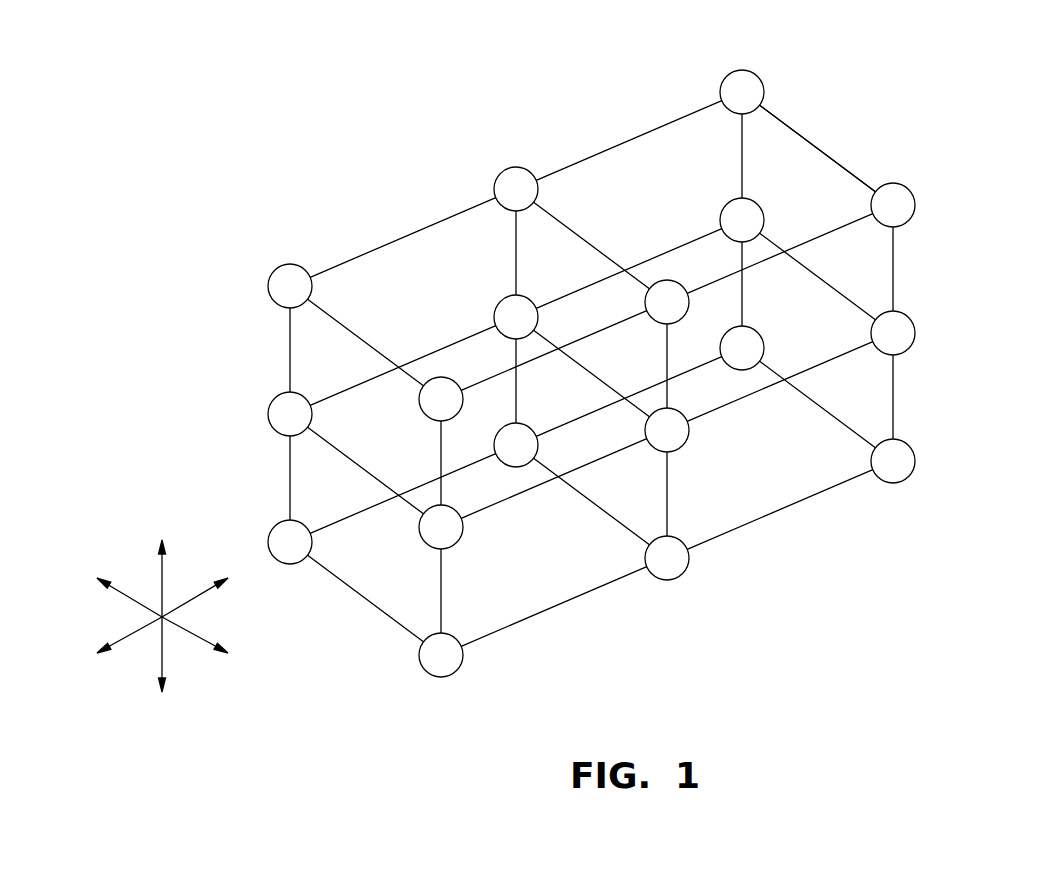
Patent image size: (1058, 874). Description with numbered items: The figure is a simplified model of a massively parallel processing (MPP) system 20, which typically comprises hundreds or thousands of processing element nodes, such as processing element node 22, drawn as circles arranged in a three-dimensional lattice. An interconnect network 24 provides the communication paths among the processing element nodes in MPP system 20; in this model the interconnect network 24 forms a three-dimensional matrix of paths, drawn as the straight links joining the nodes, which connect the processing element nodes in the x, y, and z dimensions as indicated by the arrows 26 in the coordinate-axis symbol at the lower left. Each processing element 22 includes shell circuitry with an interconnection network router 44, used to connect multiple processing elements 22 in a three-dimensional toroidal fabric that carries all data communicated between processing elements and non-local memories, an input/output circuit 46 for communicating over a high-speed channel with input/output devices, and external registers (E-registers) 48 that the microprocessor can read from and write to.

The massively parallel processing (MPP) system 20 is at (591, 346).
The processing element node 22 is at (678, 558).
The interconnect network 24 is at (809, 118).
The arrows 26 is at (215, 708).
The interconnection network router 44 is at (617, 143).
The input/output circuit 46 is at (440, 587).
The external registers (E-registers) 48 is at (838, 167).